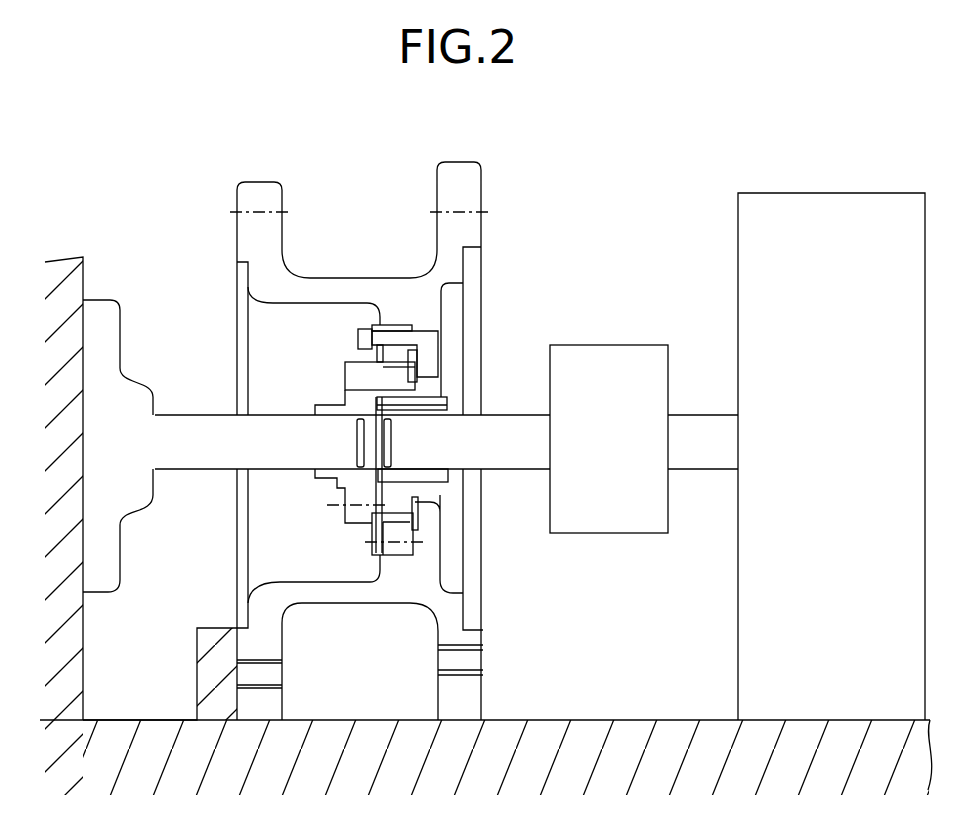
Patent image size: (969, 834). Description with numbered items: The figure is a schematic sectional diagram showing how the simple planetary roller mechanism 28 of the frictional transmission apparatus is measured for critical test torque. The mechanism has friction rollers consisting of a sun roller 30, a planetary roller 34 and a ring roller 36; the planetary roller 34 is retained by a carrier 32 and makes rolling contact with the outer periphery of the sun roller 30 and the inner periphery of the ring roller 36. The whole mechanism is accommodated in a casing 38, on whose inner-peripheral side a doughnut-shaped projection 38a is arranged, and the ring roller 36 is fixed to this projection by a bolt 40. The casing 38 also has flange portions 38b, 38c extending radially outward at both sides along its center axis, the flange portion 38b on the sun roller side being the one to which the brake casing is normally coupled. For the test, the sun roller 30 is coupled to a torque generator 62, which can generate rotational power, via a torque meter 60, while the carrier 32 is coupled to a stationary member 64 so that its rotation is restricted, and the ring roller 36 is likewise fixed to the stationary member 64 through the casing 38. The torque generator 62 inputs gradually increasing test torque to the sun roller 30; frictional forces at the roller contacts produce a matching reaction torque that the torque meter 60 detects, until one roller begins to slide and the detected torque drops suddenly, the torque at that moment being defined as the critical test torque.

The simple planetary roller mechanism 28 is at (312, 533).
The sun roller 30 is at (447, 397).
The carrier 32 is at (345, 391).
The planetary roller 34 is at (410, 362).
The ring roller 36 is at (400, 325).
The casing 38 is at (370, 594).
The doughnut-shaped projection 38a is at (430, 528).
The flange portion 38b is at (470, 699).
The flange portion 38c is at (280, 692).
The bolt 40 is at (348, 362).
The torque meter 60 is at (606, 534).
The torque generator 62 is at (852, 452).
The stationary member 64 is at (63, 462).